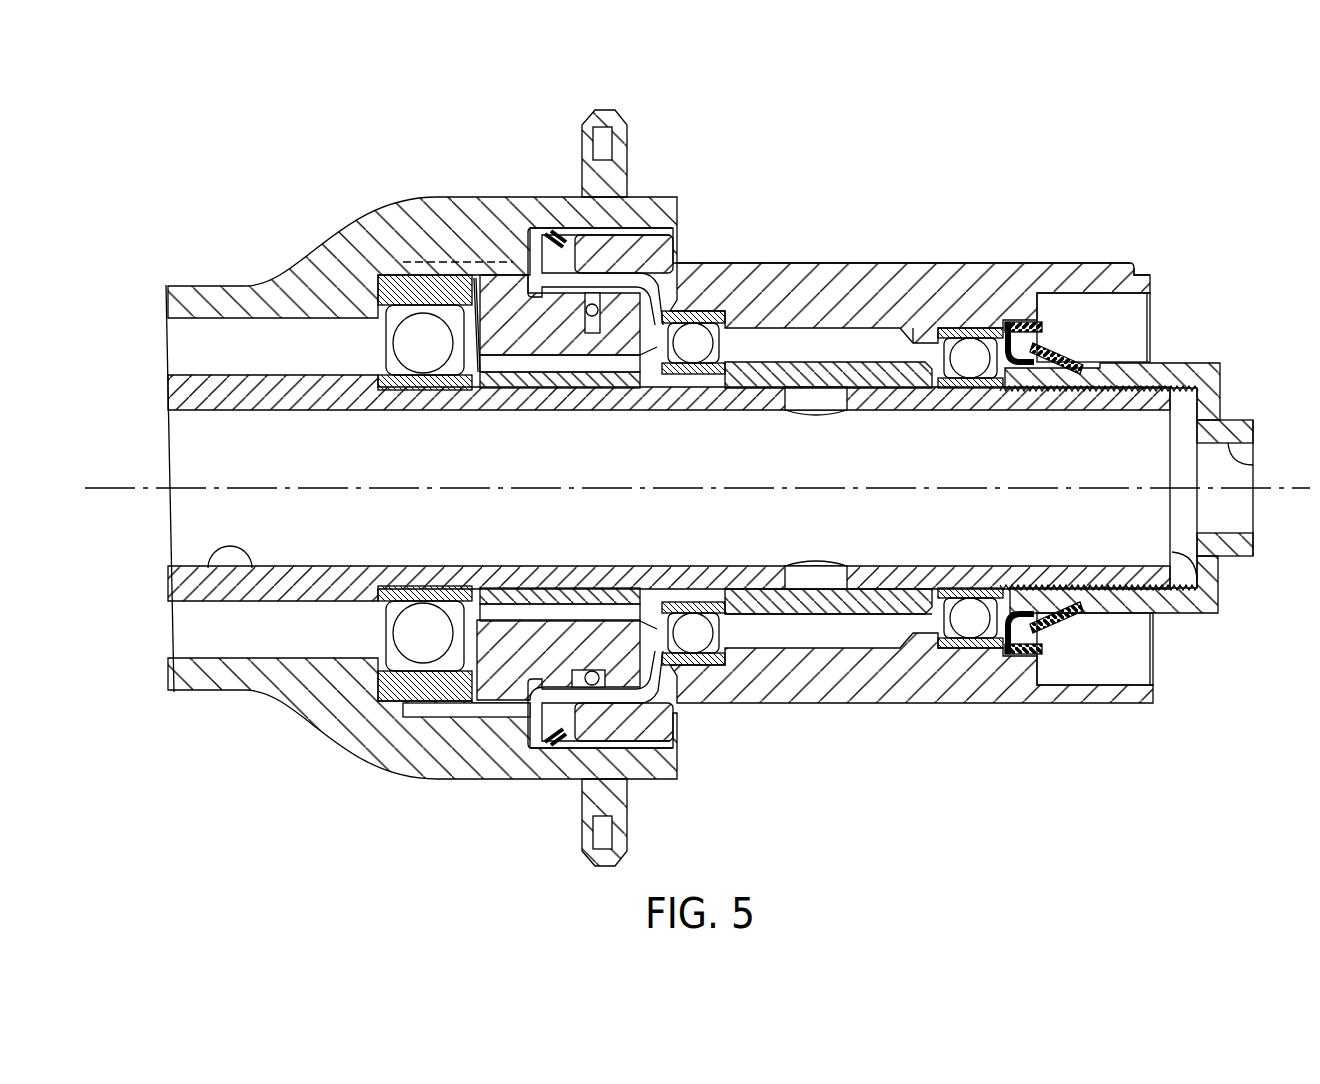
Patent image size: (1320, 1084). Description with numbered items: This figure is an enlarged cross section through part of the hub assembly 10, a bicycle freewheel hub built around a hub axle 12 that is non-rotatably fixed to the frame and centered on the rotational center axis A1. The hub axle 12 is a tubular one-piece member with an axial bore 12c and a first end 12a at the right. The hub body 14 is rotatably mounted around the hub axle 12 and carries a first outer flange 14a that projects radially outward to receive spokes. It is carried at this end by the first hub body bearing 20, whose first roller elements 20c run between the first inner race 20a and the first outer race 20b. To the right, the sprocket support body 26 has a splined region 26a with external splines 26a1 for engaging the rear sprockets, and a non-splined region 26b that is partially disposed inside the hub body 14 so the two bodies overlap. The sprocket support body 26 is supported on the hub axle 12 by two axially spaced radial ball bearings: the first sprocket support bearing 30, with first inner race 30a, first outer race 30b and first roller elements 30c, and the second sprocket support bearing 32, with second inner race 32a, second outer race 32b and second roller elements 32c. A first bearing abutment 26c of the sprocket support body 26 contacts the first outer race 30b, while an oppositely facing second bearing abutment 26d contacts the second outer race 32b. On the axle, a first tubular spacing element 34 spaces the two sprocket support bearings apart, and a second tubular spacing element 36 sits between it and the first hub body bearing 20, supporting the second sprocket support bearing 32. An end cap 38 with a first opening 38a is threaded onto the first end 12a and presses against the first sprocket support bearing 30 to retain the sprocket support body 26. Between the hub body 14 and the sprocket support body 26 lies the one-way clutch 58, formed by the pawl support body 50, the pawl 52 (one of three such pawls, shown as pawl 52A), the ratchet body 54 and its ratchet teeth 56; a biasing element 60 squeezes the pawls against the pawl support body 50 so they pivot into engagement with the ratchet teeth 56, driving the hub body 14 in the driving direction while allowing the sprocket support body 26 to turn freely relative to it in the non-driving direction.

The hub assembly 10 is at (264, 163).
The hub axle 12 is at (263, 607).
The first end 12a is at (1180, 590).
The axial bore 12c is at (222, 552).
The hub body 14 is at (209, 283).
The first outer flange 14a is at (606, 108).
The first hub body bearing 20 is at (358, 334).
The first inner race 20a is at (448, 592).
The first outer race 20b is at (437, 680).
The first roller elements 20c is at (414, 625).
The sprocket support body 26 is at (876, 210).
The splined region 26a is at (800, 260).
The splines 26a1 is at (1140, 266).
The non-splined region 26b is at (644, 228).
The first bearing abutment 26c is at (970, 378).
The second bearing abutment 26d is at (693, 378).
The first sprocket support bearing 30 is at (958, 325).
The first inner race 30a is at (985, 592).
The first outer race 30b is at (963, 650).
The first roller elements 30c is at (963, 612).
The second sprocket support bearing 32 is at (713, 308).
The second inner race 32a is at (710, 608).
The second outer race 32b is at (700, 667).
The second roller elements 32c is at (688, 625).
The first tubular spacing element 34 is at (848, 616).
The second tubular spacing element 36 is at (598, 567).
The end cap 38 is at (1224, 344).
The first opening 38a is at (1250, 452).
The pawl support body 50 is at (509, 372).
The pawl 52A is at (568, 232).
The pawl 52 is at (600, 699).
The ratchet body 54 is at (635, 740).
The ratchet teeth 56 is at (645, 306).
The one-way clutch 58 is at (692, 238).
The biasing element 60 is at (590, 318).
The rotational center axis A1 is at (1283, 490).